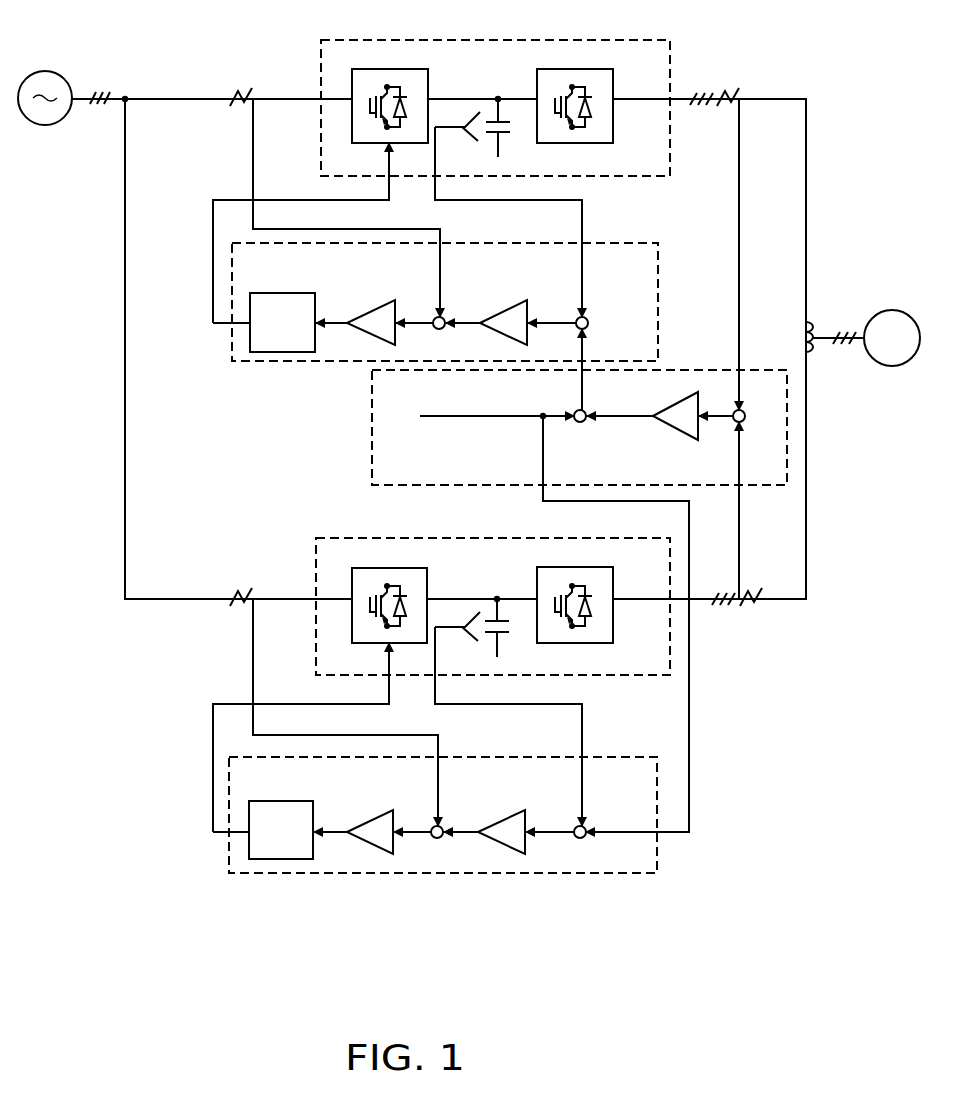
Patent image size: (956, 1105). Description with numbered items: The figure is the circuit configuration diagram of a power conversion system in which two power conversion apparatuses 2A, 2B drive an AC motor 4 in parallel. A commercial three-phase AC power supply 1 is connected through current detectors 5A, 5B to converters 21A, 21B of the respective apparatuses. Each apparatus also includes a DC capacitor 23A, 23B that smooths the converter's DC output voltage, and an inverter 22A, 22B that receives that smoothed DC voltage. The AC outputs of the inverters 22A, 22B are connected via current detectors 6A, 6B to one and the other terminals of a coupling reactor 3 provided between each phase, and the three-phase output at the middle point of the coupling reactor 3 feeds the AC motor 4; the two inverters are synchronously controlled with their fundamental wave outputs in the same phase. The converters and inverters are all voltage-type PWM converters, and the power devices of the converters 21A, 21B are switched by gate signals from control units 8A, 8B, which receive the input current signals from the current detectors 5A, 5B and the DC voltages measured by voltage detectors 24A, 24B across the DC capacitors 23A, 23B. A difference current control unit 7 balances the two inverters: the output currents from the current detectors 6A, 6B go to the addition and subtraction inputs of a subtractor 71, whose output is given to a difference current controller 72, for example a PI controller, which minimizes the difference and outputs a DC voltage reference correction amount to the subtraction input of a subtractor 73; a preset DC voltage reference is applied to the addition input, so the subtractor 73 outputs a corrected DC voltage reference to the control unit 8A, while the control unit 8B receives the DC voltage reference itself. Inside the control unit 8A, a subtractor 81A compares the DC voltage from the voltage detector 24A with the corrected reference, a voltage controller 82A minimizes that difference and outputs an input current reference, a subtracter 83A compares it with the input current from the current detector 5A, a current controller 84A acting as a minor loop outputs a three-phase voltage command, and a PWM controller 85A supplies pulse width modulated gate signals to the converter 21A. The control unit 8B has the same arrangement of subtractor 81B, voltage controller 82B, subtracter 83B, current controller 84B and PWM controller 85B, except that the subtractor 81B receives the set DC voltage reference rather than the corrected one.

The commercial three-phase AC power supply 1 is at (60, 77).
The power conversion apparatus 2A is at (488, 40).
The power conversion apparatus 2B is at (478, 538).
The coupling reactor 3 is at (816, 330).
The AC motor 4 is at (908, 318).
The current detector 5A is at (246, 97).
The current detector 5B is at (246, 597).
The current detector 6A is at (735, 97).
The current detector 6B is at (756, 597).
The difference current control unit 7 is at (700, 370).
The subtractor 71 is at (745, 410).
The difference current controller 72 is at (660, 431).
The subtractor 73 is at (586, 410).
The control unit 8A is at (640, 243).
The control unit 8B is at (622, 757).
The converter 21A is at (428, 93).
The converter 21B is at (428, 592).
The inverter 22A is at (613, 93).
The inverter 22B is at (613, 592).
The DC capacitor 23A is at (500, 134).
The DC capacitor 23B is at (499, 634).
The voltage detector 24A is at (462, 126).
The voltage detector 24B is at (462, 626).
The subtractor 81A is at (588, 318).
The subtractor 81B is at (586, 826).
The voltage controller 82A is at (520, 300).
The voltage controller 82B is at (518, 810).
The subtracter 83A is at (445, 318).
The subtracter 83B is at (443, 826).
The current controller 84A is at (385, 300).
The current controller 84B is at (385, 810).
The PWM controller 85A is at (305, 293).
The PWM controller 85B is at (302, 801).